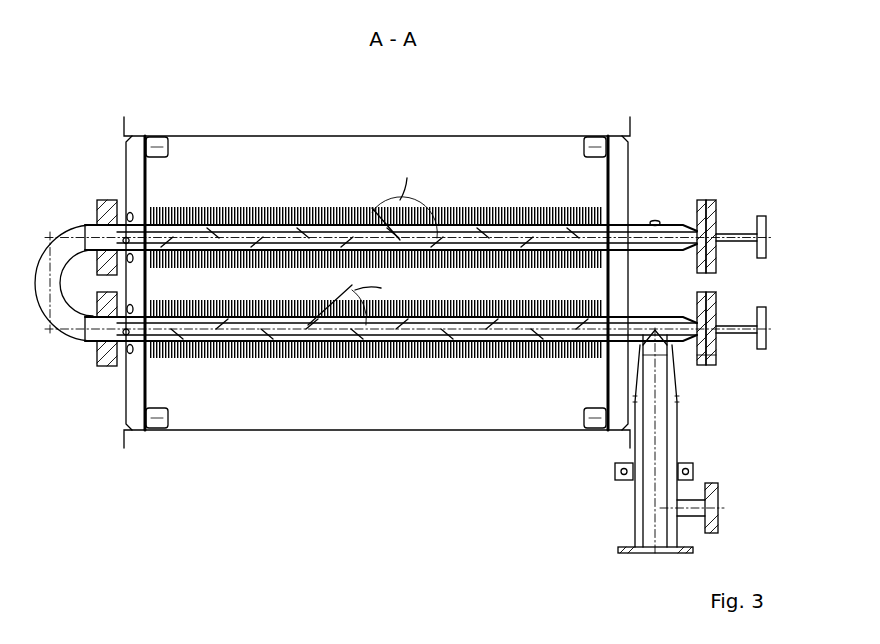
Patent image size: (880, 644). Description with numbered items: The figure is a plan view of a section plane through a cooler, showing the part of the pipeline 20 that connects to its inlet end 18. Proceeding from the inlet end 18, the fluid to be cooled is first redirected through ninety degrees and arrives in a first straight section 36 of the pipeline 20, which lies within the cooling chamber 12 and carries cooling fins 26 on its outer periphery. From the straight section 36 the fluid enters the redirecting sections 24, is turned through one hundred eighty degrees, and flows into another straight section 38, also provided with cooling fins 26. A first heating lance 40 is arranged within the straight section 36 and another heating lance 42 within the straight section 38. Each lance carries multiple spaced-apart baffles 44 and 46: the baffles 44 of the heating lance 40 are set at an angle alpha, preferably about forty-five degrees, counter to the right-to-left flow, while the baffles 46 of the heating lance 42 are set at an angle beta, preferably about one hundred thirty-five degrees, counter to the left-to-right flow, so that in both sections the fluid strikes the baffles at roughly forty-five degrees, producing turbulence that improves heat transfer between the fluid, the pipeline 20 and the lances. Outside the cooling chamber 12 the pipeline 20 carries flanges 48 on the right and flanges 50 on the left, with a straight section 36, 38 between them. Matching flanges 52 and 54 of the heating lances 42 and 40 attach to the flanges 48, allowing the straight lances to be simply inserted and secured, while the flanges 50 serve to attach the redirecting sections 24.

The cooling chamber 12 is at (442, 158).
The inlet end 18 is at (618, 548).
The pipeline 20 is at (649, 208).
The redirecting sections 24 is at (60, 320).
The cooling fins 26 is at (216, 212).
The first straight section 36 is at (346, 357).
The straight section 38 is at (282, 212).
The first heating lance 40 is at (432, 333).
The heating lance 42 is at (503, 232).
The baffles 44 is at (533, 345).
The baffles 46 is at (575, 235).
The flanges 48 is at (700, 200).
The flanges 50 is at (110, 200).
The matching flange 52 is at (712, 200).
The matching flange 54 is at (714, 355).